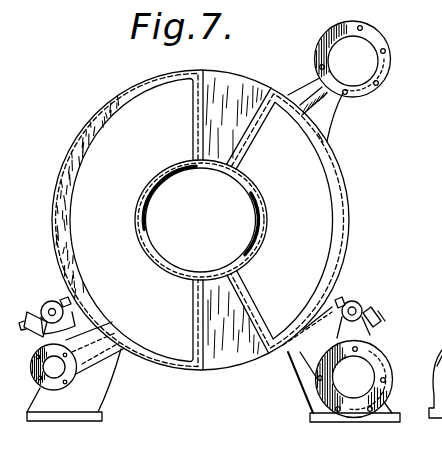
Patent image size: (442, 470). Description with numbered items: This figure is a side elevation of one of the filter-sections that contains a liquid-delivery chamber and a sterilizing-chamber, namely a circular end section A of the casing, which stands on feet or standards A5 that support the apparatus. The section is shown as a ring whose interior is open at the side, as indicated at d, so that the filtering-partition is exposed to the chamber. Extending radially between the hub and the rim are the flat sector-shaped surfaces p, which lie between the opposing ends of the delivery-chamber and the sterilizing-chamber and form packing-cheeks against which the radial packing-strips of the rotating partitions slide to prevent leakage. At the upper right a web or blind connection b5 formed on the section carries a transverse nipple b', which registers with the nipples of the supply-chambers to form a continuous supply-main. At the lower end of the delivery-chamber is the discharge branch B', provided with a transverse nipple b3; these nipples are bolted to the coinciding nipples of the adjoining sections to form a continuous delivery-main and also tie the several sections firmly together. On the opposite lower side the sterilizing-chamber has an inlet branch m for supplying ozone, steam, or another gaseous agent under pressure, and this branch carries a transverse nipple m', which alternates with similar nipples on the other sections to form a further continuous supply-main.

The end section A is at (234, 118).
The flat sector-shaped surfaces p is at (233, 226).
The open side of chamber d is at (200, 220).
The nipple b' is at (363, 59).
The web or blind connection b5 is at (333, 115).
The inlet branch m is at (71, 335).
The nipple m' is at (54, 379).
The feet or standards A5 is at (94, 393).
The discharge branch B' is at (334, 323).
The nipple b3 is at (377, 367).